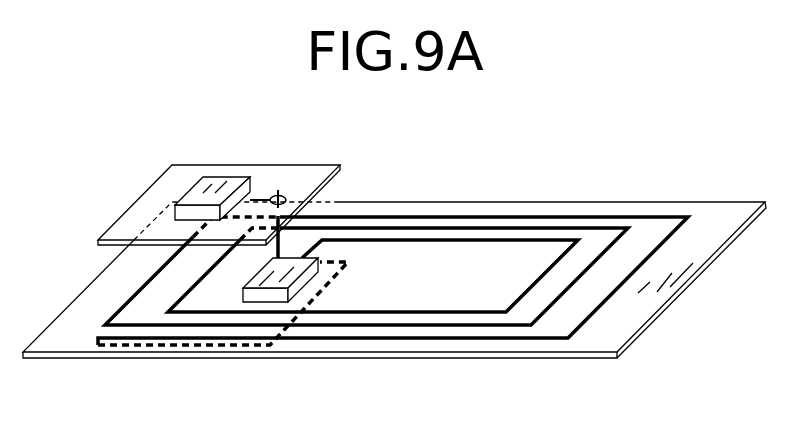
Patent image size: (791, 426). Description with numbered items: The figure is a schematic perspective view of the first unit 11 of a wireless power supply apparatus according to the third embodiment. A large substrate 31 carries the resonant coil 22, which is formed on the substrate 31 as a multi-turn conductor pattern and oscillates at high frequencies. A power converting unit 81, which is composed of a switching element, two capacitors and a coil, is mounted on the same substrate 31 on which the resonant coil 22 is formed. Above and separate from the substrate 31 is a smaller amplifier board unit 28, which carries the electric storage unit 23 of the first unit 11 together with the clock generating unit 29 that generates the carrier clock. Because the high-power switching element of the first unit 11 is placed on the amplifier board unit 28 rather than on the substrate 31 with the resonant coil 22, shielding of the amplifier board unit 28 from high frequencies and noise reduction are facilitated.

The first unit 11 is at (601, 153).
The resonant coil 22 is at (440, 216).
The electric storage unit 23 is at (220, 177).
The amplifier board unit 28 is at (292, 165).
The clock generating unit 29 is at (214, 169).
The substrate 31 is at (643, 202).
The power converting unit 81 is at (241, 298).